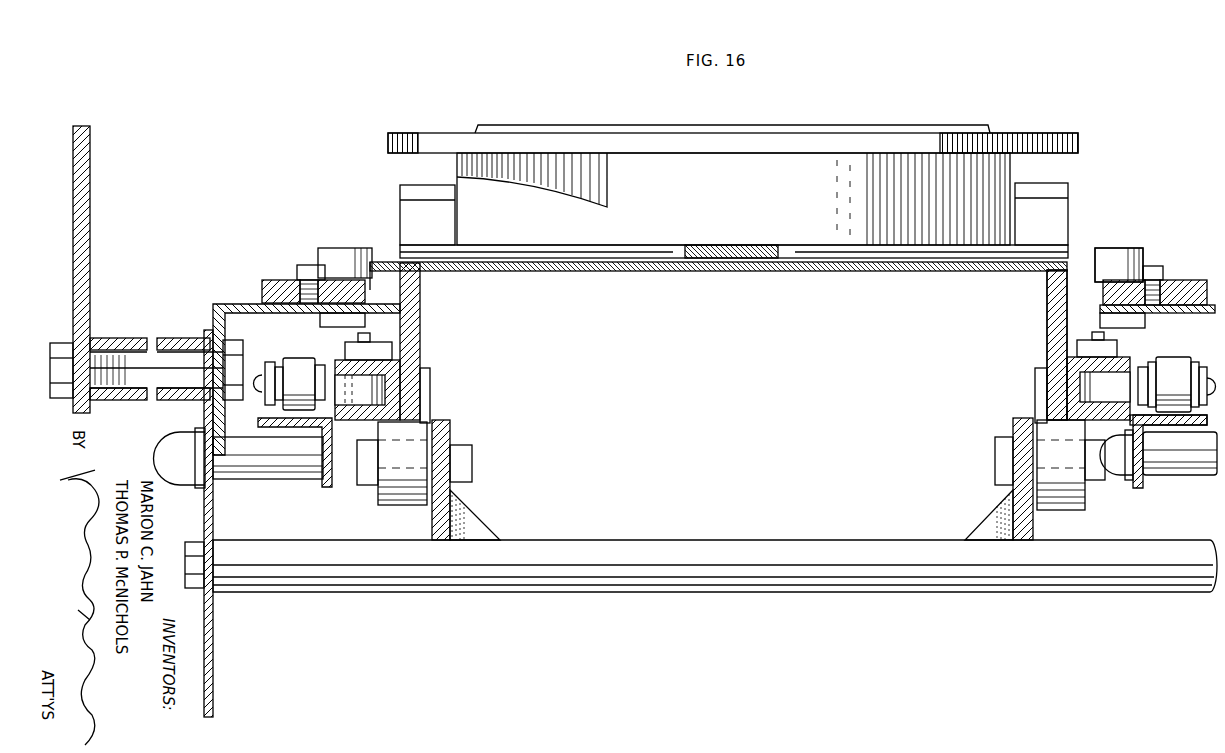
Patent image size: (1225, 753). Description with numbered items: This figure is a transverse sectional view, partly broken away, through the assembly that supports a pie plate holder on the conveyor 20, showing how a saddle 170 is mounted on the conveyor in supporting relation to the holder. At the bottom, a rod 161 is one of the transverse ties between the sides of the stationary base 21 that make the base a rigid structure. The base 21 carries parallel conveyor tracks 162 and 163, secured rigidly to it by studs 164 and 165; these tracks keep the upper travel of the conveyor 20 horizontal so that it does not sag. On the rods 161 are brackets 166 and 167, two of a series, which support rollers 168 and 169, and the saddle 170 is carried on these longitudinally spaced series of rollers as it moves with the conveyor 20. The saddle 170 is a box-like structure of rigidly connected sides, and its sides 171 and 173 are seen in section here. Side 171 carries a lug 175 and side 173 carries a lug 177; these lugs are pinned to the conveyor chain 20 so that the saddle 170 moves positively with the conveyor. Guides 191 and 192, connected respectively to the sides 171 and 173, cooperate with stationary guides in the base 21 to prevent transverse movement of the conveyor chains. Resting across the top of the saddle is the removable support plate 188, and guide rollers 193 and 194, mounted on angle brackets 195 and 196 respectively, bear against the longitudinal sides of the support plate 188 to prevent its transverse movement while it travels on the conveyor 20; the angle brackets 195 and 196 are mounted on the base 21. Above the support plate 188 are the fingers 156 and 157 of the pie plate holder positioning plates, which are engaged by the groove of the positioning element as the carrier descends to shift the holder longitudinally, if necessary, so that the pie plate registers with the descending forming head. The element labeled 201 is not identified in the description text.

The conveyor 20 is at (303, 356).
The base 21 is at (215, 648).
The finger 156 is at (1071, 210).
The finger 157 is at (405, 207).
The rod 161 is at (487, 566).
The conveyor track 162 is at (325, 487).
The conveyor track 163 is at (1145, 490).
The stud 164 is at (258, 468).
The stud 165 is at (1193, 459).
The bracket 166 is at (451, 420).
The bracket 167 is at (1000, 512).
The roller 168 is at (408, 506).
The roller 169 is at (1070, 490).
The saddle 170 is at (1040, 350).
The side 171 is at (1046, 296).
The side 173 is at (421, 303).
The lug 175 is at (1130, 360).
The lug 177 is at (350, 350).
The support plate 188 is at (627, 271).
The guide 191 is at (1036, 384).
The guide 192 is at (431, 376).
The guide roller 193 is at (1115, 248).
The guide roller 194 is at (335, 247).
The angle bracket 195 is at (1200, 313).
The angle bracket 196 is at (232, 303).
The cover plate 201 is at (1071, 126).